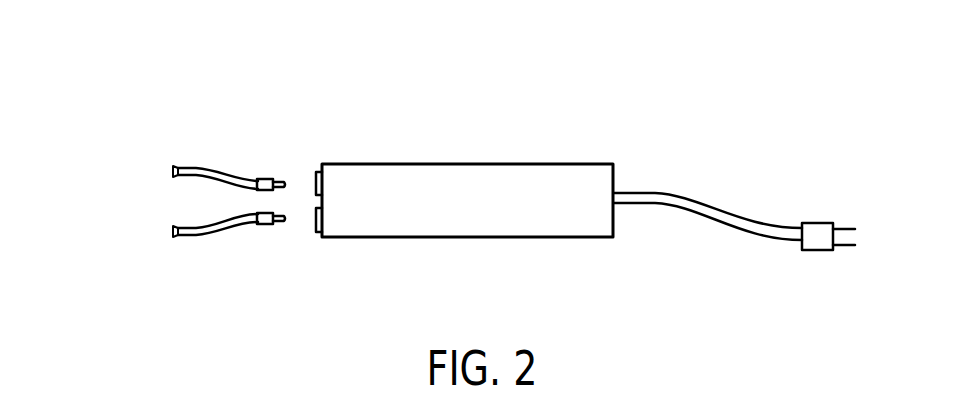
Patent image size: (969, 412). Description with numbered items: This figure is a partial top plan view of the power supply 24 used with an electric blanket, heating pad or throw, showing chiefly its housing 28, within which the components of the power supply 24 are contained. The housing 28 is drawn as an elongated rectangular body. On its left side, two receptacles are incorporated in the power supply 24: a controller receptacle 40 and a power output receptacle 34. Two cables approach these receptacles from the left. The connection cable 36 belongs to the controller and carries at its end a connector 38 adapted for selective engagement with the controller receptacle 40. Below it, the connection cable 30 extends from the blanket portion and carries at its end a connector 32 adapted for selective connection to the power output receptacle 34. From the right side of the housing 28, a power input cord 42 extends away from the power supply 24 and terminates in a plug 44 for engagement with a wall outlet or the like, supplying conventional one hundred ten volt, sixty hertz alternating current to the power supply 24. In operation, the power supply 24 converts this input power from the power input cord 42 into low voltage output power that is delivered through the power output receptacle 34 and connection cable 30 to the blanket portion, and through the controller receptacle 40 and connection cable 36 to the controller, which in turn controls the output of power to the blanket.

The power supply 24 is at (440, 99).
The housing 28 is at (490, 164).
The connection cable 30 is at (227, 229).
The connector 32 is at (263, 224).
The power output receptacle 34 is at (314, 232).
The connection cable 36 is at (209, 171).
The connector 38 is at (261, 178).
The controller receptacle 40 is at (313, 170).
The power input cord 42 is at (713, 207).
The plug 44 is at (815, 222).